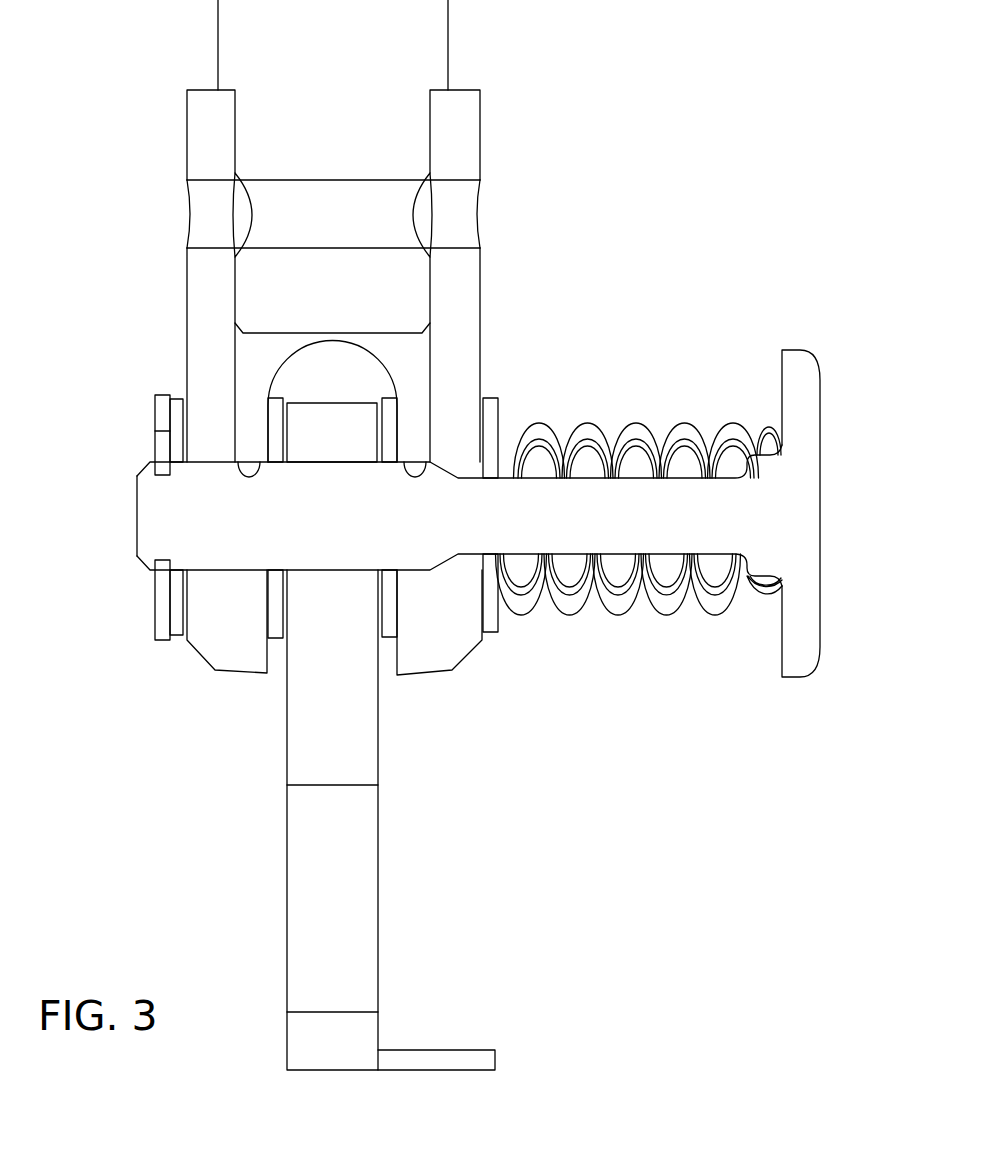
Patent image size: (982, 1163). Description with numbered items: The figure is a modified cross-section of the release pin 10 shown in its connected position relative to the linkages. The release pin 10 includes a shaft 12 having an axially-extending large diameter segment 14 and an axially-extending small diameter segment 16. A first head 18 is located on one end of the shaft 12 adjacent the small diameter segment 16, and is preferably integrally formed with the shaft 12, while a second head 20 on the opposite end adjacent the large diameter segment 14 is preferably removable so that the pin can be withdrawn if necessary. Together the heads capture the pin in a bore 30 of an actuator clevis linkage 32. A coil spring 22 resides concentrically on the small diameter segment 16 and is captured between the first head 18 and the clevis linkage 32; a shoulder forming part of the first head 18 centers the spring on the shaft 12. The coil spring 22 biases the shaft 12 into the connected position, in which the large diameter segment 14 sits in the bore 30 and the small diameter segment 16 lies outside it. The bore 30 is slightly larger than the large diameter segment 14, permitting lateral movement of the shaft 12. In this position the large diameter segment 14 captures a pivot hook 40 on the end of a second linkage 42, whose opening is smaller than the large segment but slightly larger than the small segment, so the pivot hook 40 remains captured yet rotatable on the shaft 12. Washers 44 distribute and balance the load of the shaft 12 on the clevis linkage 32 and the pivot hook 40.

The release pin 10 is at (722, 267).
The shaft 12 is at (570, 574).
The large diameter segment 14 is at (180, 521).
The small diameter segment 16 is at (645, 503).
The first head 18 is at (807, 398).
The second head 20 is at (154, 608).
The coil spring 22 is at (692, 580).
The bore 30 is at (422, 463).
The actuator clevis linkage 32 is at (252, 288).
The pivot hook 40 is at (333, 443).
The second linkage 42 is at (358, 767).
The washers 44 is at (174, 619).